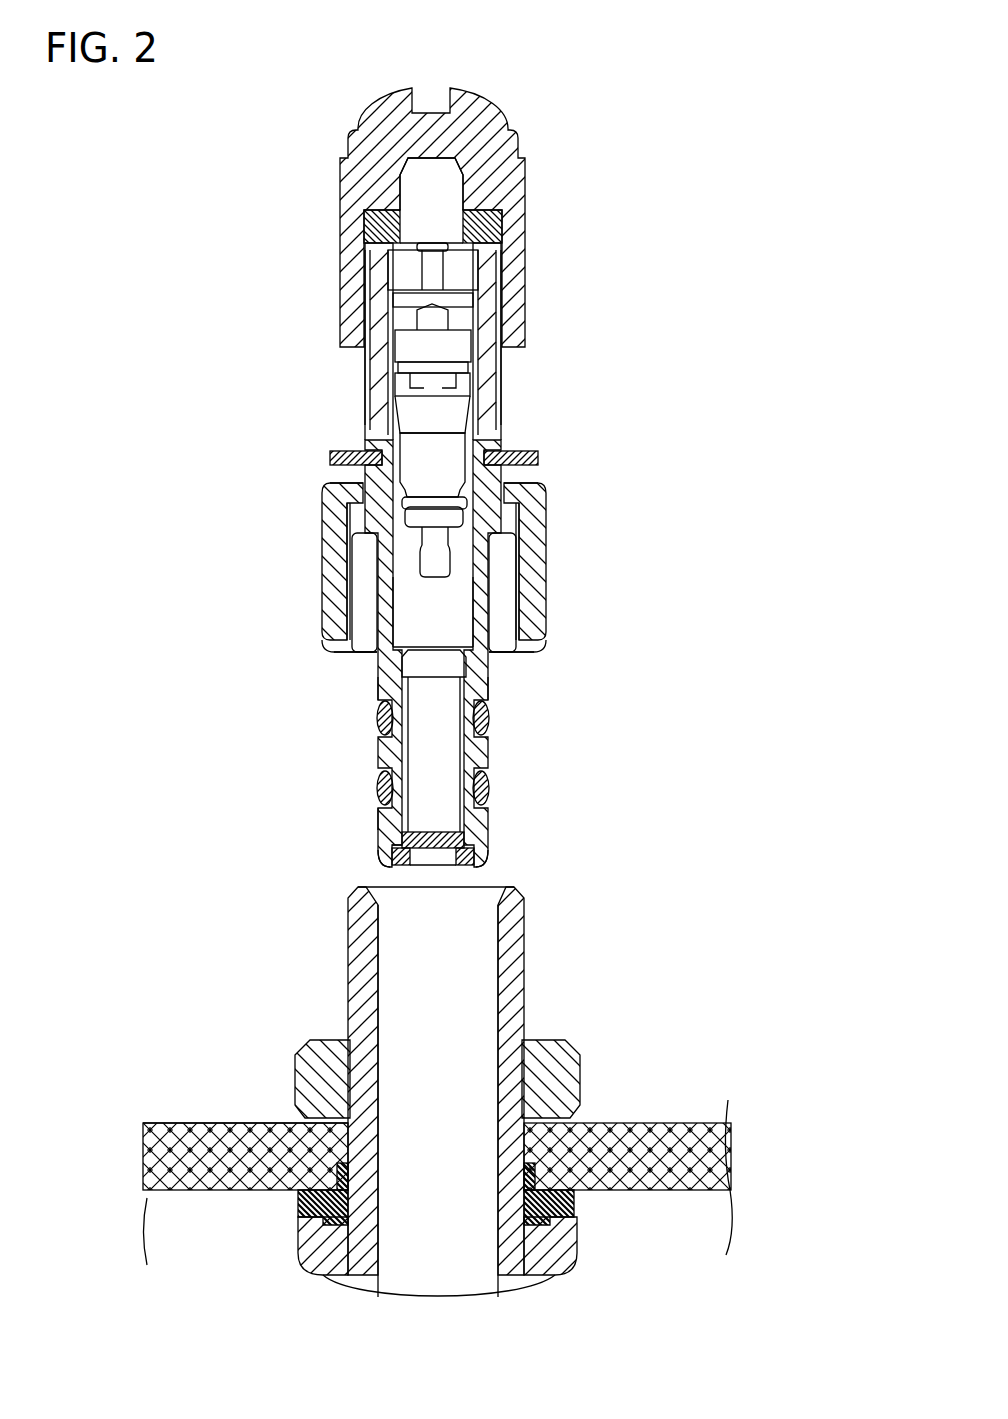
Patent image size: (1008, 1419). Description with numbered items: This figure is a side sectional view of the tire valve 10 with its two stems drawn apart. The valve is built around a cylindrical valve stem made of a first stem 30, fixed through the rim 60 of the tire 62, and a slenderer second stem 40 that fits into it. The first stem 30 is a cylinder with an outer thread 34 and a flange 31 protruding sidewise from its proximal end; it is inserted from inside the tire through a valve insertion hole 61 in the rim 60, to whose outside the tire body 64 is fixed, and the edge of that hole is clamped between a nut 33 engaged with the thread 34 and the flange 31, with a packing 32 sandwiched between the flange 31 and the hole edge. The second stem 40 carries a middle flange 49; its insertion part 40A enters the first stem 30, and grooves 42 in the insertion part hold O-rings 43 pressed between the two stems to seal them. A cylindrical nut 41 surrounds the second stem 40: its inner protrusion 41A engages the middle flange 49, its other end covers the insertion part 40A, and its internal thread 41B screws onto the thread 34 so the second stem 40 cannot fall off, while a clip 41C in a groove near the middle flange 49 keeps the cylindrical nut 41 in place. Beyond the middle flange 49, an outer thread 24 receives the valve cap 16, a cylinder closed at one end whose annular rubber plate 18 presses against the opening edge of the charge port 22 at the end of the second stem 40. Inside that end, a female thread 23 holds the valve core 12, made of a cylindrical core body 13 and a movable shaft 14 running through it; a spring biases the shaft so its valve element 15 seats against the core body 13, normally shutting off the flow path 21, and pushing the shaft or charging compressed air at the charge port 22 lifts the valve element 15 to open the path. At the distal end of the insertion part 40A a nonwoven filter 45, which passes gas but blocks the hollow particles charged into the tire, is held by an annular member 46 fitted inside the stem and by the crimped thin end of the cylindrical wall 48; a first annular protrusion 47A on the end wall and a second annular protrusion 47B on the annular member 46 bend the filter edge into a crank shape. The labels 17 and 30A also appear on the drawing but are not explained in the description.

The tire valve 10 is at (688, 52).
The valve core 12 is at (478, 410).
The core body 13 is at (420, 462).
The movable shaft 14 is at (432, 272).
The valve element 15 is at (410, 508).
The valve cap 16 is at (521, 142).
The cap inner wall 17 is at (372, 296).
The rubber plate 18 is at (378, 228).
The flow path 21 is at (400, 592).
The charge port 22 is at (468, 250).
The female thread 23 is at (392, 377).
The thread 24 is at (500, 298).
The first stem 30 is at (347, 950).
The bore 30A is at (503, 1016).
The flange 31 is at (300, 1258).
The packing 32 is at (562, 1200).
The nut 33 is at (300, 1083).
The thread 34 is at (527, 945).
The second stem 40 is at (497, 595).
The insertion part 40A is at (378, 682).
The cylindrical nut 41 is at (542, 555).
The inner protrusion 41A is at (507, 487).
The thread 41B is at (510, 655).
The clip 41C is at (520, 452).
The grooves 42 is at (487, 790).
The O-rings 43 is at (380, 787).
The filter 45 is at (470, 834).
The annular member 46 is at (476, 860).
The first annular protrusion 47A is at (398, 835).
The second annular protrusion 47B is at (395, 847).
The cylindrical wall 48 is at (398, 860).
The middle flange 49 is at (514, 522).
The rim 60 is at (160, 1123).
The valve insertion hole 61 is at (297, 1213).
The tire 62 is at (195, 1123).
The tire body 64 is at (732, 1225).